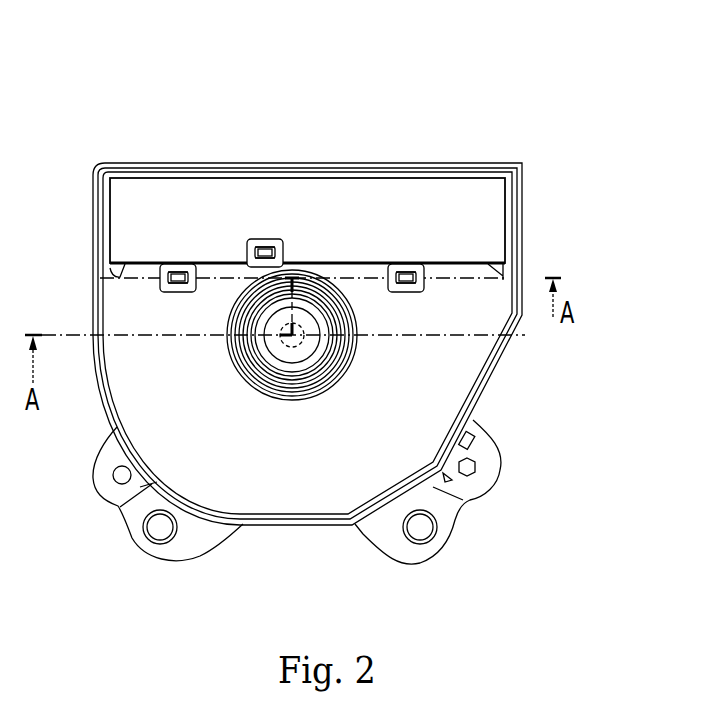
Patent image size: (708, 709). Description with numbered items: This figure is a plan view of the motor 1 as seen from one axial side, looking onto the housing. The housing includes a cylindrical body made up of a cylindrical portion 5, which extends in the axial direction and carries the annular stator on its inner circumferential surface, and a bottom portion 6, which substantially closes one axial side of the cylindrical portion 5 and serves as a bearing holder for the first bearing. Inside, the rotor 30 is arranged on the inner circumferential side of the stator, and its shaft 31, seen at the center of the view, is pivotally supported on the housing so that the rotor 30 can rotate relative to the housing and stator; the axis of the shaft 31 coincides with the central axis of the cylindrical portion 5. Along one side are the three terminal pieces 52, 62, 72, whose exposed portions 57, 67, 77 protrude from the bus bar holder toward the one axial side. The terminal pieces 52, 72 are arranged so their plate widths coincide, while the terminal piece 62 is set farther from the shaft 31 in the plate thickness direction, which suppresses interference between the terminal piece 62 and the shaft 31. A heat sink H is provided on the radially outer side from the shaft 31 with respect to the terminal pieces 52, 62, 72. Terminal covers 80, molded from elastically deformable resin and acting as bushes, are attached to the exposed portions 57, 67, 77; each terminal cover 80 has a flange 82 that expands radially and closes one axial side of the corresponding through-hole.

The motor 1 is at (365, 278).
The heat sink H is at (450, 240).
The cylindrical portion 5 is at (503, 363).
The bottom portion 6 is at (467, 337).
The rotor 30 is at (320, 337).
The shaft 31 is at (360, 324).
The terminal piece 52 is at (190, 270).
The exposed portion 57 is at (192, 230).
The terminal piece 62 is at (265, 245).
The exposed portion 67 is at (287, 218).
The terminal piece 72 is at (407, 270).
The exposed portion 77 is at (428, 230).
The terminal cover 80 is at (247, 268).
The flange 82 is at (390, 278).